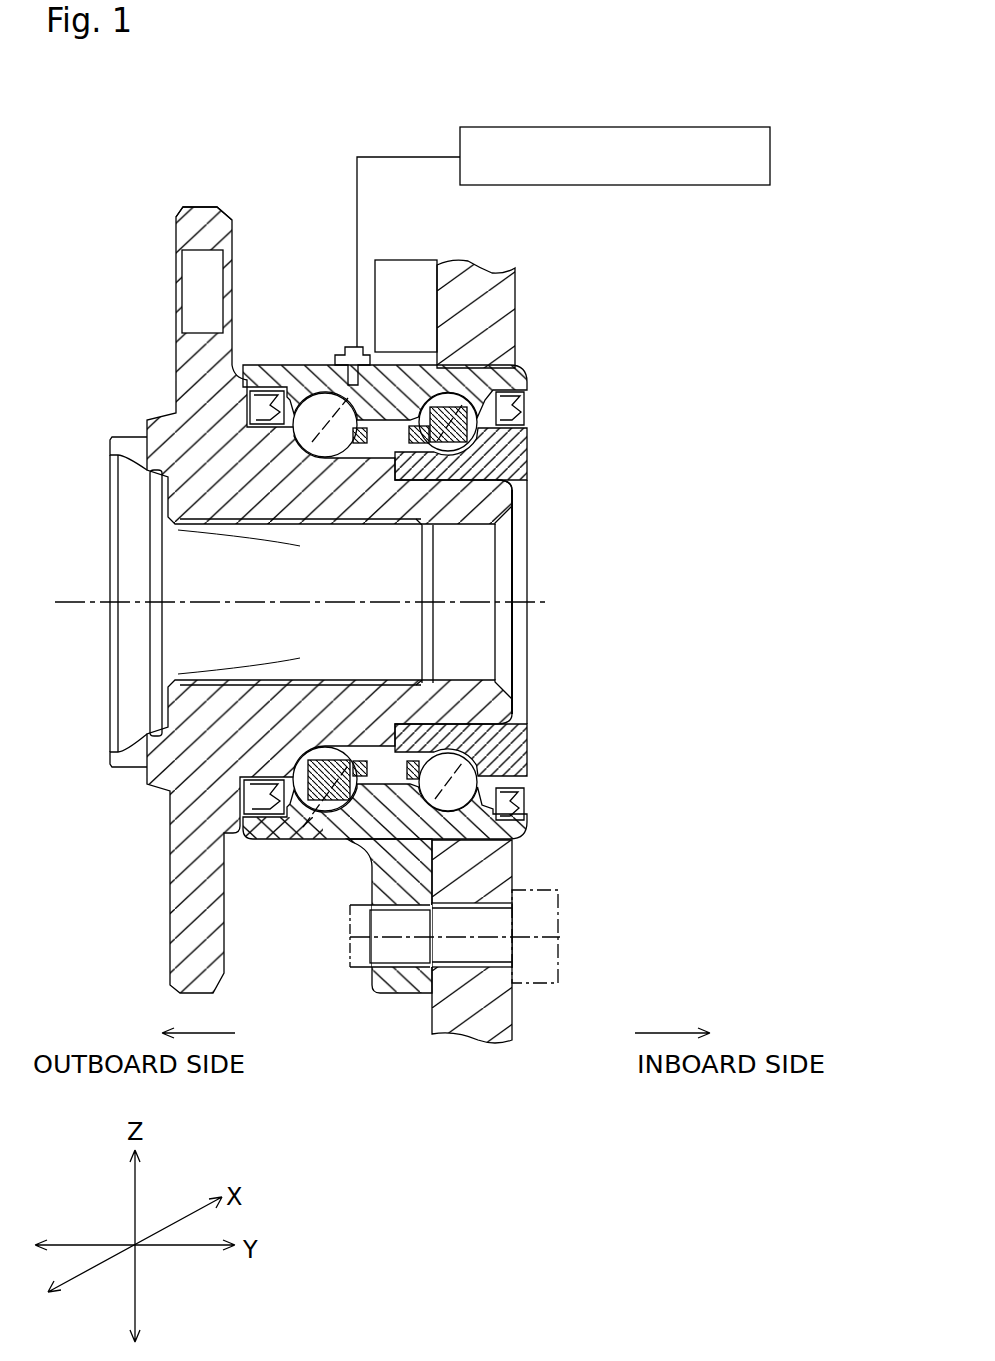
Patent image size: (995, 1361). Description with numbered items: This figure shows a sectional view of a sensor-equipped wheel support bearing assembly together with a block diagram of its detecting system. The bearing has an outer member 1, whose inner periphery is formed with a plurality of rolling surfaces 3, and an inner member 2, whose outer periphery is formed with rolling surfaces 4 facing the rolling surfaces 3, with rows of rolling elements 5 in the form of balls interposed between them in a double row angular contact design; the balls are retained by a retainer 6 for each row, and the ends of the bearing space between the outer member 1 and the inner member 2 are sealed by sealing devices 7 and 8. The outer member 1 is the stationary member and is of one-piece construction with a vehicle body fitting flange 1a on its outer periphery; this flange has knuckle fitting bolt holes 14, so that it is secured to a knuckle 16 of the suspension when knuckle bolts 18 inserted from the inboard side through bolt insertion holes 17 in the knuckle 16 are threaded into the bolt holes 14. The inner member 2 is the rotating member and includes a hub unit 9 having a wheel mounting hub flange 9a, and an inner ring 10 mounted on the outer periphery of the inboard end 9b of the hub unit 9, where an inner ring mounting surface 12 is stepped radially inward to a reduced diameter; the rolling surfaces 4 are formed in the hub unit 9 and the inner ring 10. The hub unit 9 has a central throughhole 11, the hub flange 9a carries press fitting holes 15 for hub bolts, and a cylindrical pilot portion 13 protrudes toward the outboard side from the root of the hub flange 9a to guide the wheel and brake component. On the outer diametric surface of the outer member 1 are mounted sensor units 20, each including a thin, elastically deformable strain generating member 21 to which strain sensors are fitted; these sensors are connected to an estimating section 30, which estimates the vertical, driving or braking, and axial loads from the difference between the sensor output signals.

The outer member 1 is at (315, 593).
The vehicle body fitting flange 1a is at (410, 994).
The inner member 2 is at (304, 553).
The rolling surfaces 3 is at (310, 830).
The rolling surfaces 4 is at (293, 767).
The rolling elements 5 is at (285, 835).
The retainer 6 is at (395, 755).
The sealing device 7 is at (255, 402).
The sealing device 8 is at (527, 412).
The hub unit 9 is at (187, 490).
The wheel mounting hub flange 9a is at (200, 207).
The inboard end of the hub unit 9b is at (505, 500).
The inner ring 10 is at (380, 487).
The throughhole 11 is at (250, 679).
The inner ring mounting surface 12 is at (485, 473).
The pilot portion 13 is at (110, 442).
The knuckle fitting bolt holes 14 is at (393, 960).
The press fitting holes 15 is at (178, 258).
The knuckle 16 is at (480, 1044).
The bolt insertion holes 17 is at (500, 950).
The knuckle bolts 18 is at (557, 957).
The sensor unit 20 is at (361, 271).
The strain generating member 21 is at (343, 352).
The estimating section 30 is at (540, 127).